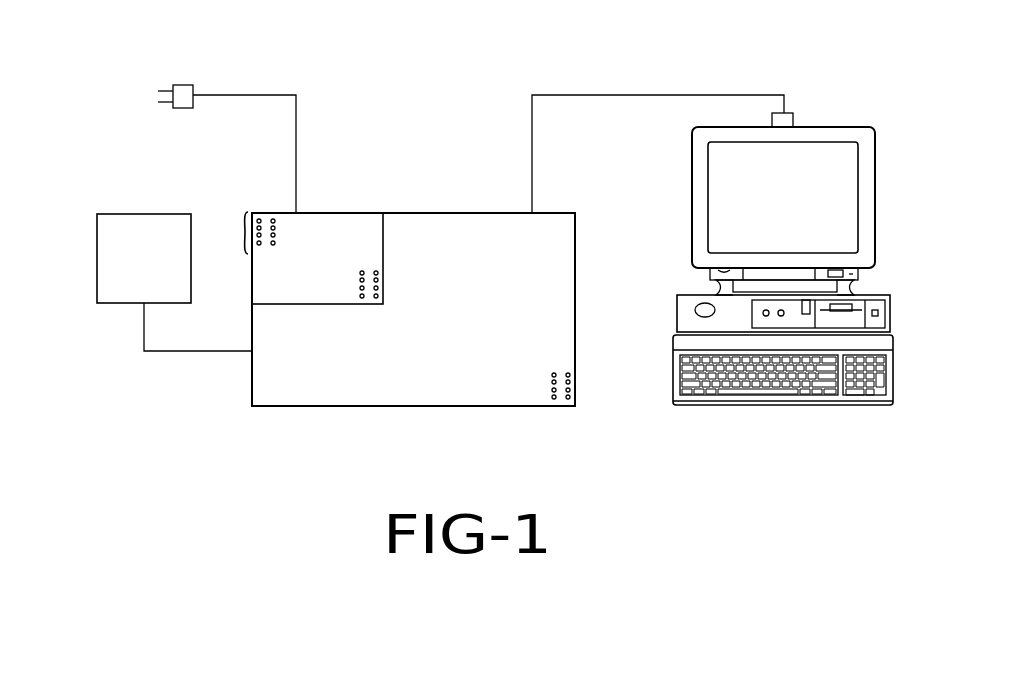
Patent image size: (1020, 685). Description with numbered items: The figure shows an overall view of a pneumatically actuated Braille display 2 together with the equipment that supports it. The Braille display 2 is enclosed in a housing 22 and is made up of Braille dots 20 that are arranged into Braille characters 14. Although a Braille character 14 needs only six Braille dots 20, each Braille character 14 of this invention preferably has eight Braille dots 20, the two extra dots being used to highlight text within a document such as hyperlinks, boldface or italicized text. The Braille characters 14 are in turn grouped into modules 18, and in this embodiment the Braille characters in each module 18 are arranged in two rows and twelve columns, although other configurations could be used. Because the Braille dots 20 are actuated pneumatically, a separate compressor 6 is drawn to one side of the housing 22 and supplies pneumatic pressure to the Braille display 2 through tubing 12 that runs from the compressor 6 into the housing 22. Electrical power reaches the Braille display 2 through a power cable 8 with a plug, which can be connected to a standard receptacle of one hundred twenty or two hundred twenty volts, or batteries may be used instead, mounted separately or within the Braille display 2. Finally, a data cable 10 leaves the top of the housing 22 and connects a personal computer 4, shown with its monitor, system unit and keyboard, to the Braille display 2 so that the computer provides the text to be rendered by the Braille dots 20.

The Braille display 2 is at (295, 406).
The personal computer 4 is at (737, 405).
The compressor 6 is at (97, 259).
The power cable 8 is at (296, 123).
The data cable 10 is at (615, 95).
The tubing 12 is at (198, 351).
The Braille character 14 is at (236, 230).
The module 18 is at (383, 245).
The Braille dots 20 is at (554, 398).
The housing 22 is at (411, 406).